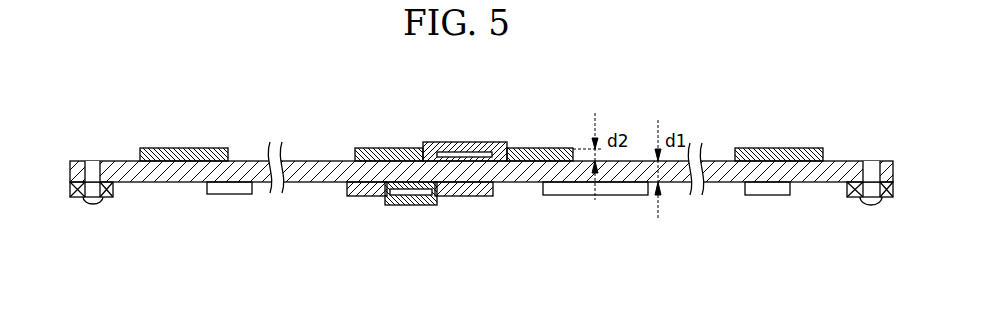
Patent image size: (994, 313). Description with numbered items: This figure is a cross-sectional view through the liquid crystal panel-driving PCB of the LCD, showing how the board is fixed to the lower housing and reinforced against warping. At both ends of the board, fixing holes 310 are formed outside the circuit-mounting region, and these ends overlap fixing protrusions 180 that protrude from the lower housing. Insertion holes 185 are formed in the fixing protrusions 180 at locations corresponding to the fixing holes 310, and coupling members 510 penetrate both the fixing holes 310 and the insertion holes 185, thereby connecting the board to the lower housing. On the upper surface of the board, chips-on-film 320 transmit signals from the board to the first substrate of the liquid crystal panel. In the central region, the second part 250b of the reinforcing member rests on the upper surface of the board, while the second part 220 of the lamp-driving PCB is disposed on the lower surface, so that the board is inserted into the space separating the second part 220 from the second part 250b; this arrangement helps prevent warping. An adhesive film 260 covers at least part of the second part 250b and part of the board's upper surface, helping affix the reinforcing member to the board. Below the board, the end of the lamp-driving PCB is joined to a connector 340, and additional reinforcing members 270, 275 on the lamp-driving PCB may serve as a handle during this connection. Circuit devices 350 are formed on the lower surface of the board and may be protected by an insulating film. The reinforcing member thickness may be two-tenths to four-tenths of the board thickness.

The fixing hole 310 is at (73, 158).
The chip-on-film 320 is at (178, 147).
The adhesive film 260 is at (375, 147).
The second part of the reinforcing member 250b is at (453, 141).
The circuit device 350 is at (233, 195).
The connector 340 is at (362, 197).
The second part of the lamp-driving PCB 220 is at (470, 197).
The additional reinforcing member 270 is at (416, 206).
The additional reinforcing member 275 is at (393, 206).
The fixing protrusion 180 is at (77, 197).
The insertion hole 185 is at (117, 193).
The coupling member 510 is at (92, 204).